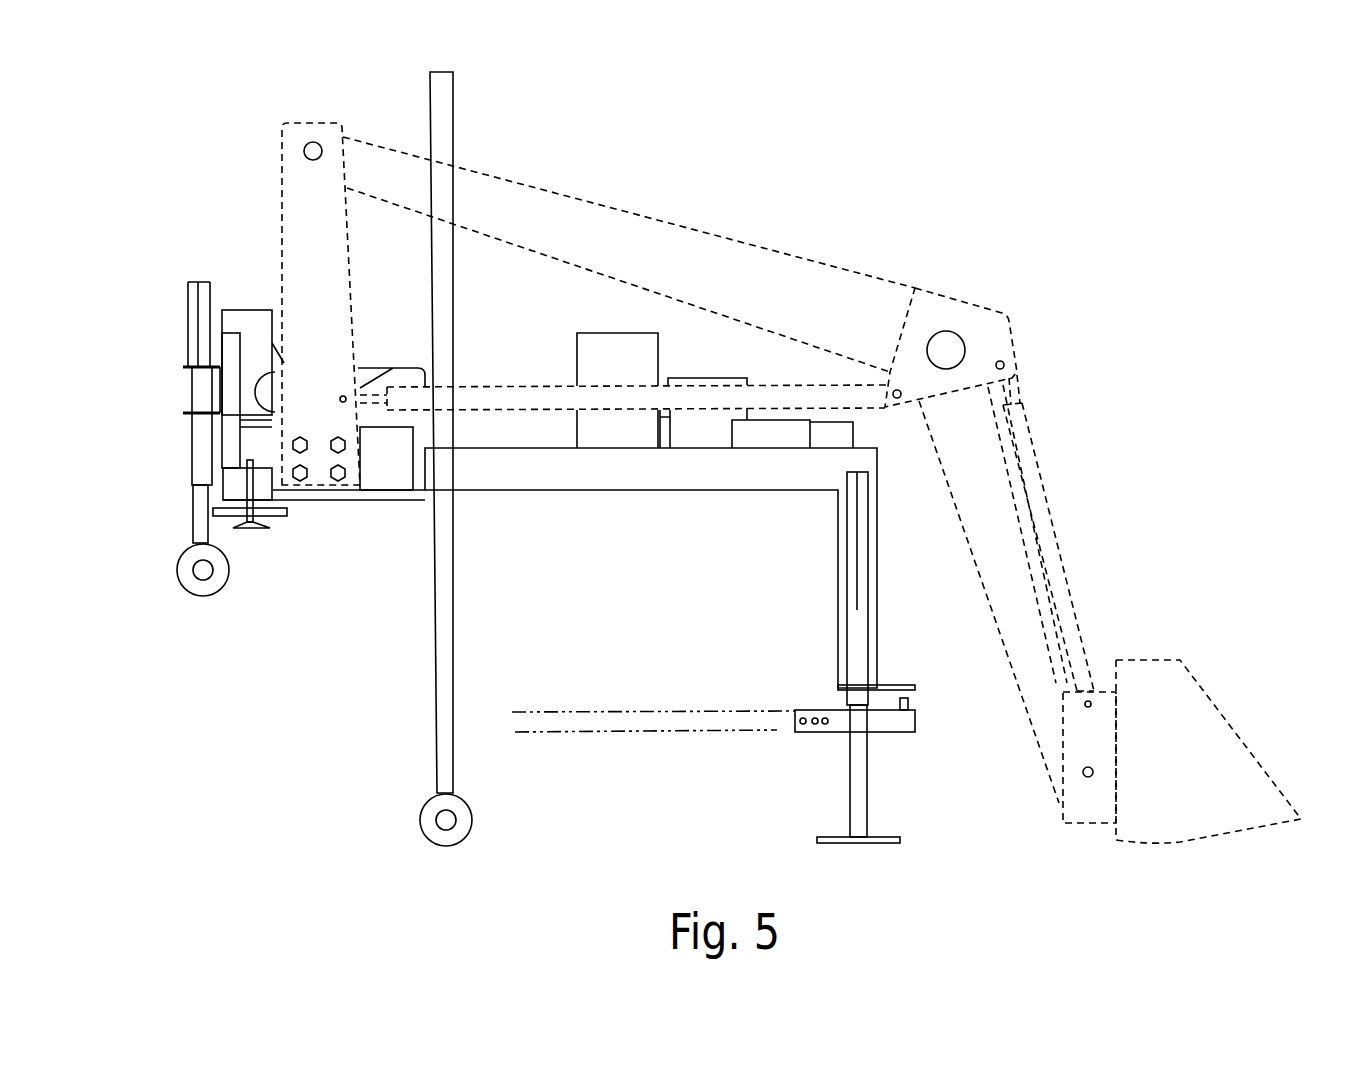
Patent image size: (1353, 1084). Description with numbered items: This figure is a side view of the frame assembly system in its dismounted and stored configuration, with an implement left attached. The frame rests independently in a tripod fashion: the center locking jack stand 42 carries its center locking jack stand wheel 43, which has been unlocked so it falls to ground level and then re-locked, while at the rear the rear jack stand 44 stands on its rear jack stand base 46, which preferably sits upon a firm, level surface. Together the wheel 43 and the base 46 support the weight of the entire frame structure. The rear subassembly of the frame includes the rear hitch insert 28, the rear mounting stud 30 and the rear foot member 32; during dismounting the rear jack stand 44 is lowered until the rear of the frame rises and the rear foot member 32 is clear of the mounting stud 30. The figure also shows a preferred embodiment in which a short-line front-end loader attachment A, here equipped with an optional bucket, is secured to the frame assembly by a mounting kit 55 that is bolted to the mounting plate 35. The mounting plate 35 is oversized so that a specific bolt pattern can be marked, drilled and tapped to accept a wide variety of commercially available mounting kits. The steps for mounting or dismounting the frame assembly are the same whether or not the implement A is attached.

The rear hitch insert 28 is at (842, 725).
The rear mounting stud 30 is at (905, 703).
The rear foot member 32 is at (900, 683).
The mounting plate 35 is at (377, 455).
The center locking jack stand 42 is at (438, 98).
The center locking jack stand wheel 43 is at (427, 820).
The rear jack stand 44 is at (855, 633).
The rear jack stand base 46 is at (890, 838).
The mounting kit 55 is at (297, 272).
The front-end loader attachment A is at (992, 238).